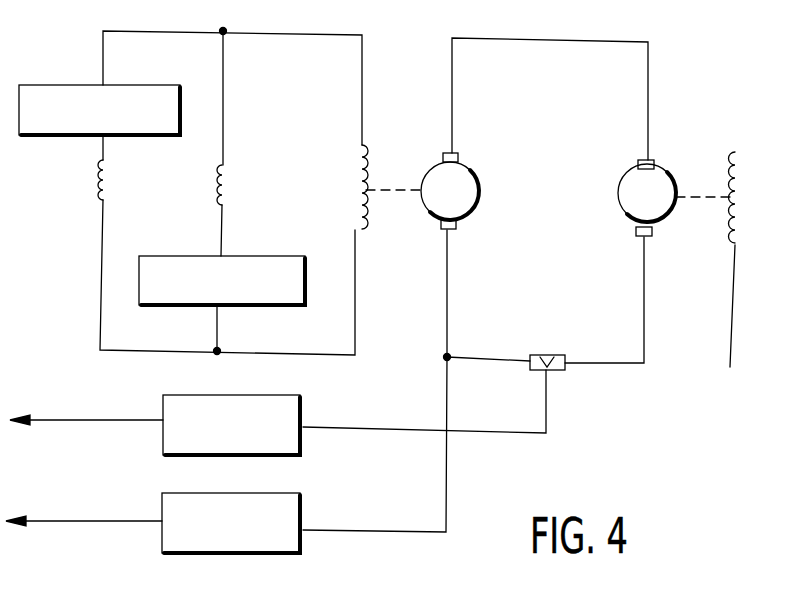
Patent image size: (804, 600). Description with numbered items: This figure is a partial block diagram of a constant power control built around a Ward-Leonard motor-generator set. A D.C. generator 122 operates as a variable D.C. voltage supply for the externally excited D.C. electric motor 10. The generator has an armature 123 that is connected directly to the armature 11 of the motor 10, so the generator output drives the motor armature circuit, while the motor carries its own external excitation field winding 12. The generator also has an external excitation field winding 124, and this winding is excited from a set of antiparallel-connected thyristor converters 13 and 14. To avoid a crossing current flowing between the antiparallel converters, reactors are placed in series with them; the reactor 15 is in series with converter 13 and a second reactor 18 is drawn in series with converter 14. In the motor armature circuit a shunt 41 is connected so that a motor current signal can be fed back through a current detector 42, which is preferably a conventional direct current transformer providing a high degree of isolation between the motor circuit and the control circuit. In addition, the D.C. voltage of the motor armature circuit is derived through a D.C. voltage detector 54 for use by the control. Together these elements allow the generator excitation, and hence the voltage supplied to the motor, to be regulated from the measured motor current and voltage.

The D.C. electric motor 10 is at (681, 160).
The armature 11 is at (629, 179).
The external excitation field winding 12 is at (740, 228).
The thyristor converter 13 is at (69, 85).
The thyristor converter 14 is at (272, 257).
The reactor 15 is at (108, 181).
The reactor 18 is at (216, 184).
The shunt 41 is at (545, 354).
The current detector 42 is at (306, 384).
The D.C. voltage detector 54 is at (302, 503).
The D.C. generator 122 is at (410, 150).
The armature 123 is at (479, 184).
The external excitation field winding 124 is at (343, 187).